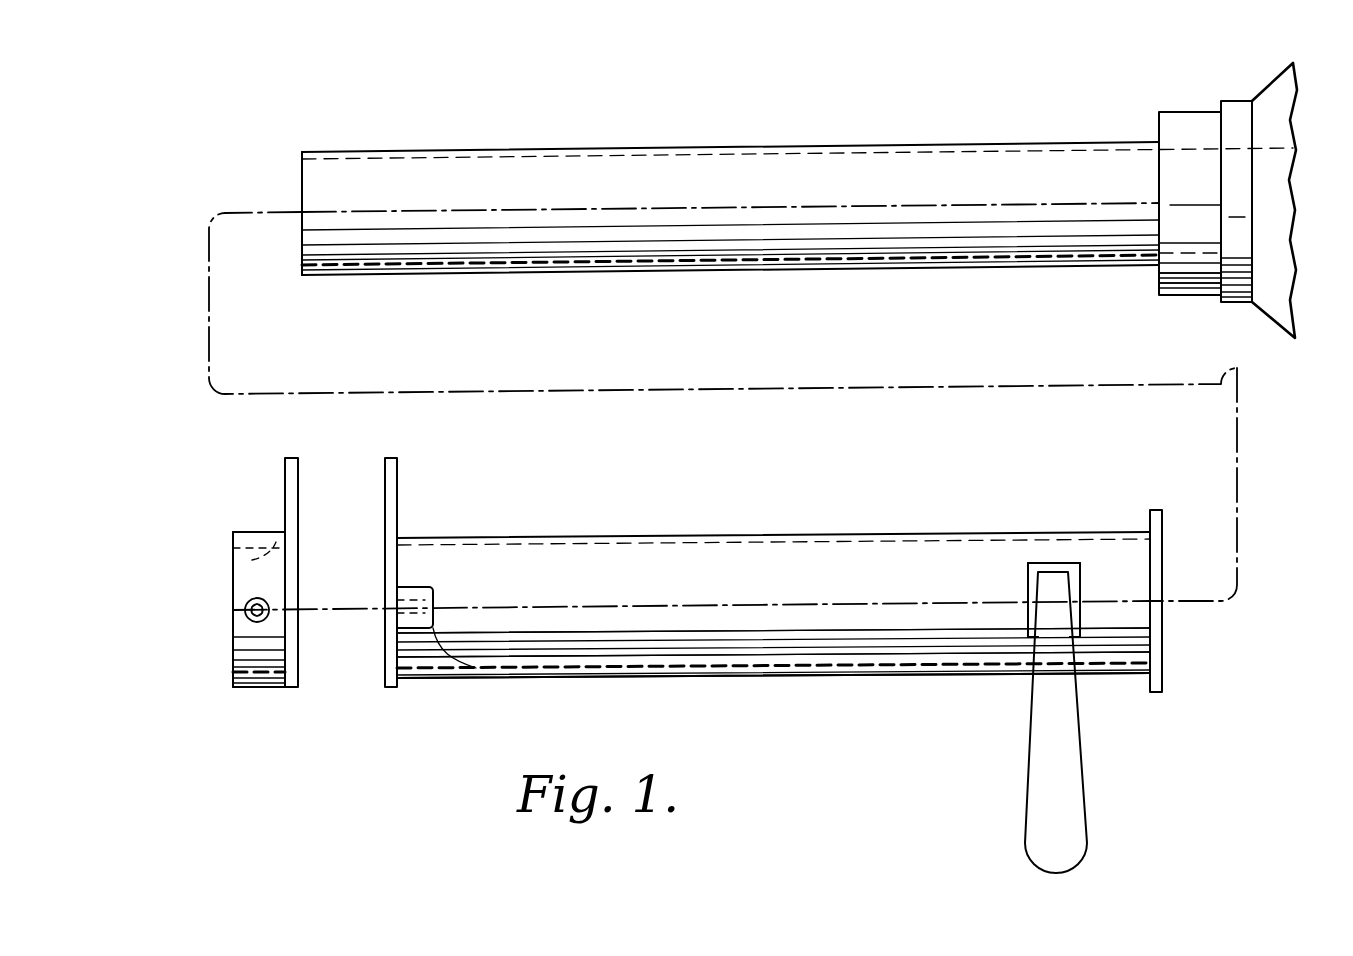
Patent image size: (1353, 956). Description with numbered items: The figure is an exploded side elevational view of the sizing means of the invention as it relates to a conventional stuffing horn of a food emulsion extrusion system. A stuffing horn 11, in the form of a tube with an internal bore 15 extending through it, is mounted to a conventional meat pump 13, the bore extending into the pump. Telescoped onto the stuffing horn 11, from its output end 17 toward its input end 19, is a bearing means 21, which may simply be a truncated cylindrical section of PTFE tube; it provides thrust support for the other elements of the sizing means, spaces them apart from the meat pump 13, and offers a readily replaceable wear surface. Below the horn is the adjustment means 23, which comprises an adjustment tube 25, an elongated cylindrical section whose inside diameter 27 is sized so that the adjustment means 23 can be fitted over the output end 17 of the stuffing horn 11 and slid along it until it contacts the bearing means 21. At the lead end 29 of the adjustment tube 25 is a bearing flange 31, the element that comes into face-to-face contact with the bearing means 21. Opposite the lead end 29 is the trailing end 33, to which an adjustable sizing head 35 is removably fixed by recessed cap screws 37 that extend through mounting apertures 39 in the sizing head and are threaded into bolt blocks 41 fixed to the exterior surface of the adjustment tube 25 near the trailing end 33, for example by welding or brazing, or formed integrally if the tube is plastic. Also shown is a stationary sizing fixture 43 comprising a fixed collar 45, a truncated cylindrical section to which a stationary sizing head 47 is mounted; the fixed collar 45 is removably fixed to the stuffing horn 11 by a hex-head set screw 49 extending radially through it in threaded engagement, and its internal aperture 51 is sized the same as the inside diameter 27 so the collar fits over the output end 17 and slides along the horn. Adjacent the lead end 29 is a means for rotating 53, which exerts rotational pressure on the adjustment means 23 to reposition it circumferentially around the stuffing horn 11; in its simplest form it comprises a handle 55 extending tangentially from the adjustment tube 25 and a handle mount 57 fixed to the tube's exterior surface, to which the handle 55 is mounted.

The stuffing horn 11 is at (432, 150).
The meat pump 13 is at (1276, 96).
The internal bore 15 is at (638, 160).
The output end 17 is at (302, 168).
The input end 19 is at (1220, 128).
The bearing means 21 is at (1159, 272).
The adjustment means 23 is at (655, 530).
The adjustment tube 25 is at (852, 535).
The inside diameter 27 is at (905, 662).
The lead end 29 is at (1145, 633).
The bearing flange 31 is at (1162, 681).
The trailing end 33 is at (400, 688).
The adjustable sizing head 35 is at (397, 478).
The recessed cap screws 37 is at (420, 600).
The mounting apertures 39 is at (395, 620).
The bolt blocks 41 is at (470, 678).
The stationary sizing fixture 43 is at (260, 687).
The fixed collar 45 is at (262, 530).
The stationary sizing head 47 is at (285, 472).
The hex-head set screw 49 is at (248, 620).
The internal aperture 51 is at (233, 568).
The means for rotating 53 is at (1025, 783).
The handle 55 is at (1075, 816).
The handle mount 57 is at (1028, 570).